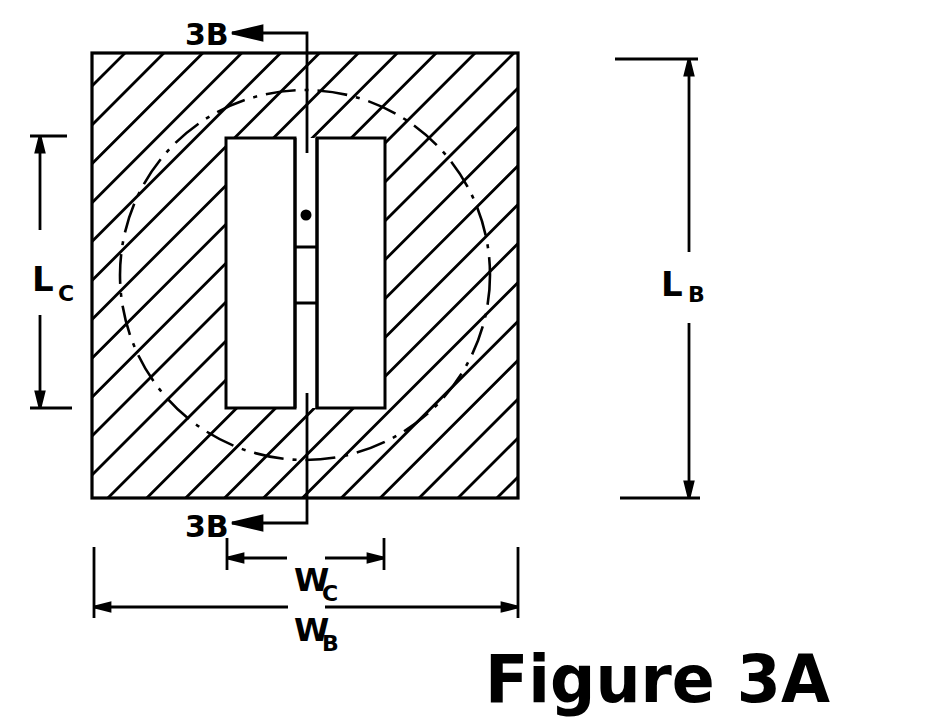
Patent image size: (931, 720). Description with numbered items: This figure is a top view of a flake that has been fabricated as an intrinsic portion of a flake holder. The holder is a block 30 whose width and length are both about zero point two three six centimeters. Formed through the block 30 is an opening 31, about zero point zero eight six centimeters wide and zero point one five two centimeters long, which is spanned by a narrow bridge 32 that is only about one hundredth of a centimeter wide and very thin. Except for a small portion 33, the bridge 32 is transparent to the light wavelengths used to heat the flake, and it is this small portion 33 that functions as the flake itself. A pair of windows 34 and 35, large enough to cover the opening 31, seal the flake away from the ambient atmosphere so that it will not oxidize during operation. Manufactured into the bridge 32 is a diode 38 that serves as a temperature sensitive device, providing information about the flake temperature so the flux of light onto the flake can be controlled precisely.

The block 30 is at (503, 112).
The opening 31 is at (281, 277).
The narrow bridge 32 is at (318, 350).
The small portion of the bridge 33 is at (307, 283).
The window 34 is at (390, 275).
The window 35 is at (478, 222).
The diode 38 is at (306, 215).